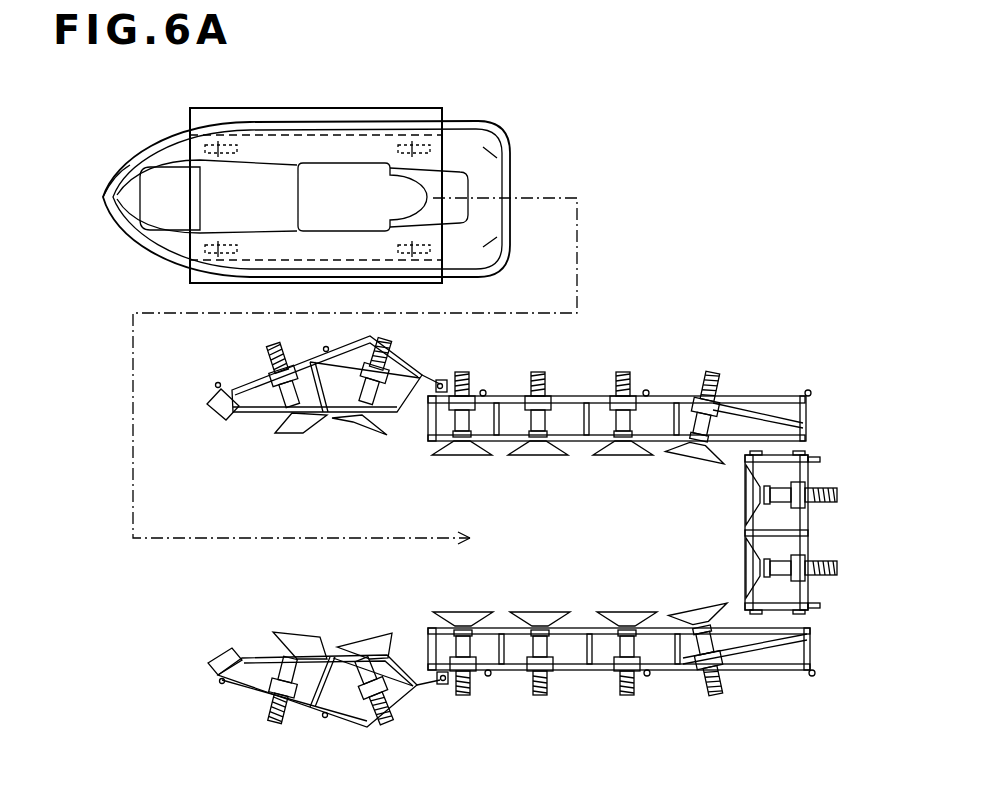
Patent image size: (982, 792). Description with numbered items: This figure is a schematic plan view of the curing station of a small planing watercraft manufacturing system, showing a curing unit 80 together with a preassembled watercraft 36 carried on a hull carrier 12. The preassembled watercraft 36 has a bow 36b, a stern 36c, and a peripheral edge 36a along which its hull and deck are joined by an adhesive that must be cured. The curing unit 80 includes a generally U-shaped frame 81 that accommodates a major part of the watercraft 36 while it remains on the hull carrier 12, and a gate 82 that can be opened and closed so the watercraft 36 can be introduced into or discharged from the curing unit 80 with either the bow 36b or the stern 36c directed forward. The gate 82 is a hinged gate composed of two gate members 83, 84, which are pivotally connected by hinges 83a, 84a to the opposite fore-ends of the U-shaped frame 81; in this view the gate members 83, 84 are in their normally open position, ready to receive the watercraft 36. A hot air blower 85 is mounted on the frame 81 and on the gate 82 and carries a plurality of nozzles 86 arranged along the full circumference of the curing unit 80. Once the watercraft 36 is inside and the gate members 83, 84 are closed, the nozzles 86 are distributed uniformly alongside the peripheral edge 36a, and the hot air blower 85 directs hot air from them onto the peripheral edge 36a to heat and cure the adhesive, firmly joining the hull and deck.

The hull carrier 12 is at (297, 109).
The preassembled watercraft 36 is at (348, 157).
The peripheral edge 36a is at (420, 122).
The bow 36b is at (105, 198).
The stern 36c is at (510, 165).
The curing unit 80 is at (741, 302).
The U-shaped frame 81 is at (660, 396).
The gate 82 is at (80, 457).
The gate member 83 is at (250, 418).
The hinge 83a is at (443, 380).
The gate member 84 is at (253, 652).
The hinge 84a is at (443, 684).
The hot air blower 85 is at (771, 376).
The nozzles 86 is at (528, 454).